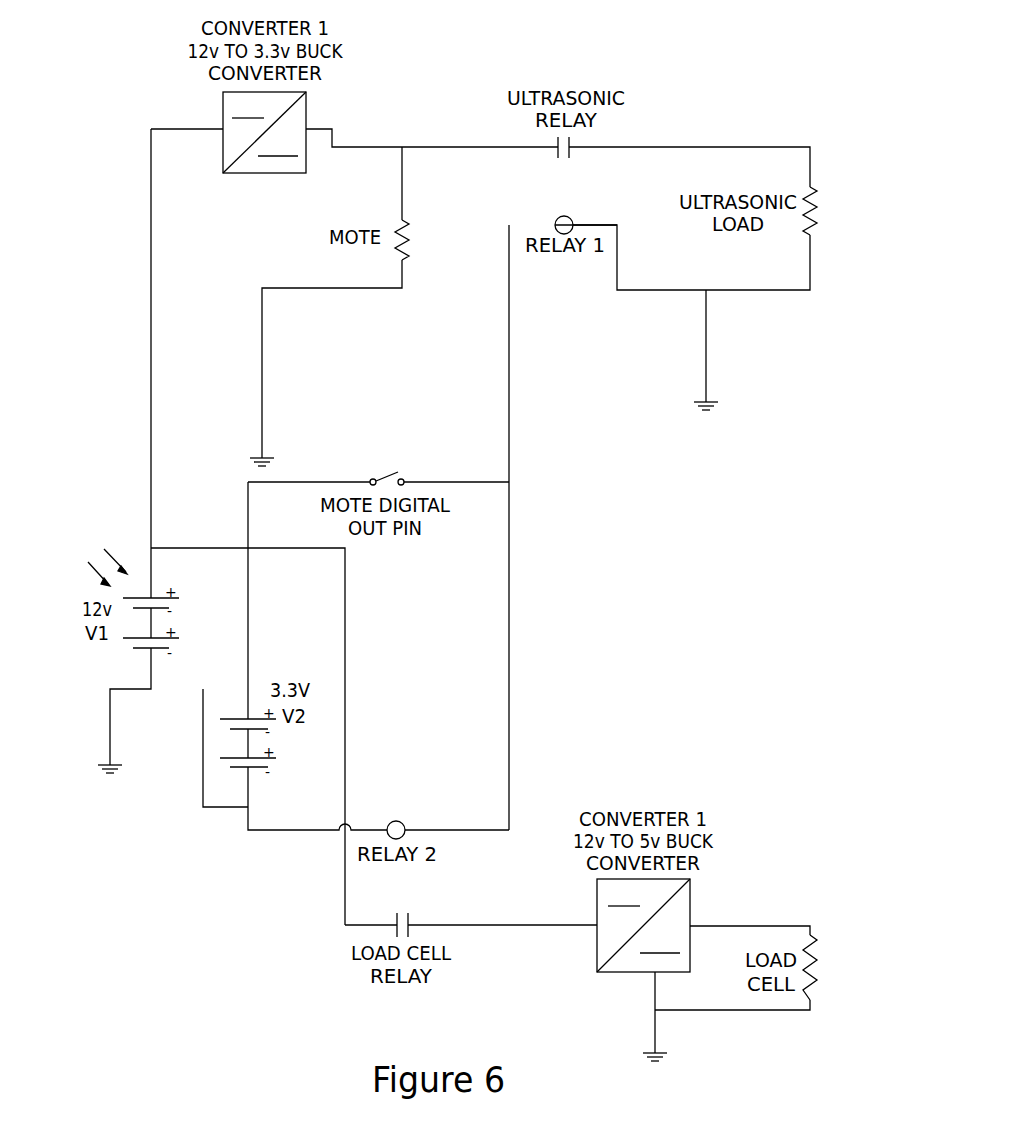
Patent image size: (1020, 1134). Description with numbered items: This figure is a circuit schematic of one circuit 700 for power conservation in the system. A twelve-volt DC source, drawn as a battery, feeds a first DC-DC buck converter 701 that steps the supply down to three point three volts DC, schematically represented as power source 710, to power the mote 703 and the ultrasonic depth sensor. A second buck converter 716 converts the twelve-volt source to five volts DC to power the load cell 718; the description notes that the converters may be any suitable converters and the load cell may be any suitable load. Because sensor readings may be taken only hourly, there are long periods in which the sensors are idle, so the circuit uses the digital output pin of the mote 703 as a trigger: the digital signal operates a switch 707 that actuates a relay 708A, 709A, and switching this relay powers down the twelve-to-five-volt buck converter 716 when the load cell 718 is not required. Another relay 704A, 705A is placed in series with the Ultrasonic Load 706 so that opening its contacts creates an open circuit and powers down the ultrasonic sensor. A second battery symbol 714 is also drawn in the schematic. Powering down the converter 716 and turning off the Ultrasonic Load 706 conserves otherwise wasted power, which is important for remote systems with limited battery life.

The circuit 700 is at (140, 50).
The DC-DC buck converter 701 is at (308, 95).
The mote 703 is at (402, 220).
The relay 704A is at (572, 152).
The relay 705A is at (570, 218).
The Ultrasonic Load 706 is at (815, 207).
The switch 707 is at (388, 470).
The relay 708A is at (402, 820).
The relay 709A is at (405, 910).
The power source 710 is at (276, 727).
The 12v battery V1 714 is at (125, 647).
The 12-to-5V buck converter 716 is at (692, 895).
The load cell 718 is at (818, 970).